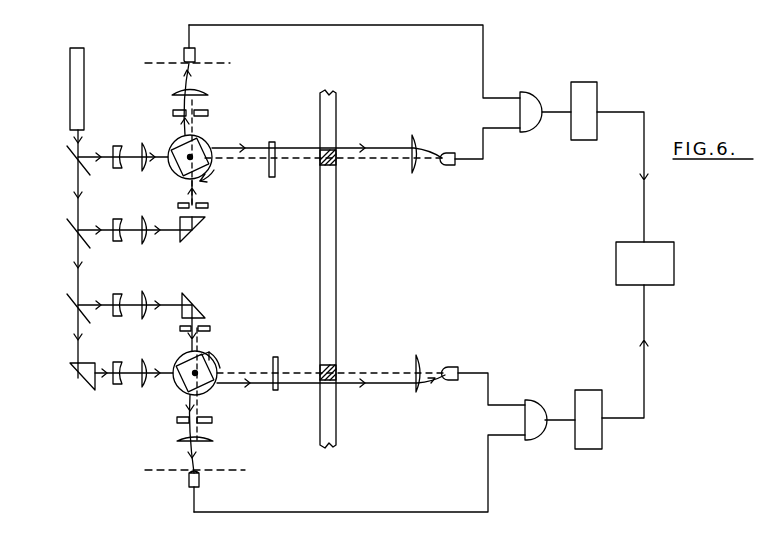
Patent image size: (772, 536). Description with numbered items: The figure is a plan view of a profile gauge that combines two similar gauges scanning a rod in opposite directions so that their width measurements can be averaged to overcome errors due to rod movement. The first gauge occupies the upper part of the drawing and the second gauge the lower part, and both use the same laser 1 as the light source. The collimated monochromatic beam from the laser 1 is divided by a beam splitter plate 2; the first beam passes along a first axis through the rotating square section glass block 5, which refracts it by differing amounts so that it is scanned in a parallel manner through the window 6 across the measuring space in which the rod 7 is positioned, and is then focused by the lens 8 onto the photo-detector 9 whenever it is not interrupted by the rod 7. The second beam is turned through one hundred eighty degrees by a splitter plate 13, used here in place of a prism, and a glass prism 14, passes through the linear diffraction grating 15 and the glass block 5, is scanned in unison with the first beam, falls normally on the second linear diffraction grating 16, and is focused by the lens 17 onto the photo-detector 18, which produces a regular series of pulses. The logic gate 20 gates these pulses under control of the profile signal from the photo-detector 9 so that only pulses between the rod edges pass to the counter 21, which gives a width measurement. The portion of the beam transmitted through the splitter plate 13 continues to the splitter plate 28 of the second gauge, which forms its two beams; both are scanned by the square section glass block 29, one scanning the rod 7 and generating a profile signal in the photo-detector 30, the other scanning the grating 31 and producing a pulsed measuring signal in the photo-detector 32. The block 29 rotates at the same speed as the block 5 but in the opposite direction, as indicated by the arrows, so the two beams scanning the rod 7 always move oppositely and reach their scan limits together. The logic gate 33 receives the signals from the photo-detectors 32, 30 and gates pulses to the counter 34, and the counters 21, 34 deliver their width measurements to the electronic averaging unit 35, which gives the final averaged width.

The laser 1 is at (77, 83).
The beam splitter plate 2 is at (72, 161).
The square section glass block 5 is at (176, 173).
The window 6 is at (272, 142).
The rod 7 is at (337, 227).
The lens 8 is at (414, 142).
The photo-detector 9 is at (448, 153).
The splitter plate 13 is at (70, 232).
The glass prism 14 is at (203, 238).
The linear diffraction grating 15 is at (208, 208).
The second linear diffraction grating 16 is at (208, 113).
The lens 17 is at (206, 93).
The photo-detector 18 is at (196, 54).
The logic gate 20 is at (527, 92).
The counter 21 is at (588, 82).
The splitter plate 28 is at (70, 306).
The square section glass block 29 is at (202, 355).
The photo-detector 30 is at (456, 368).
The grating 31 is at (212, 421).
The photo-detector 32 is at (201, 480).
The logic gate 33 is at (533, 440).
The counter 34 is at (600, 449).
The electronic averaging unit 35 is at (674, 262).